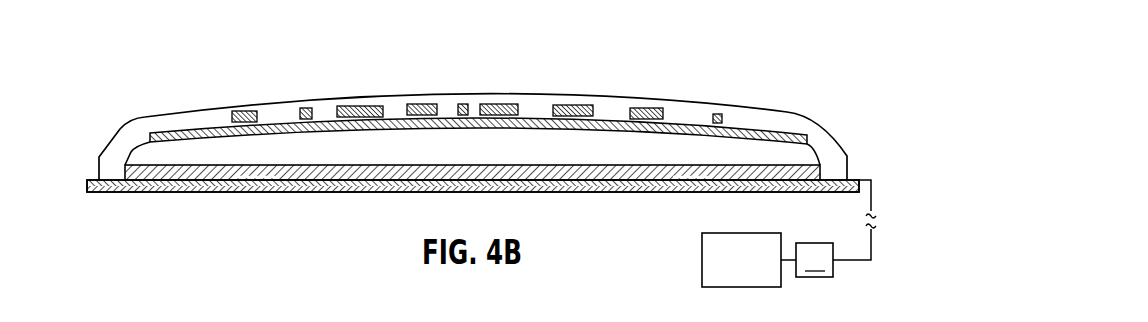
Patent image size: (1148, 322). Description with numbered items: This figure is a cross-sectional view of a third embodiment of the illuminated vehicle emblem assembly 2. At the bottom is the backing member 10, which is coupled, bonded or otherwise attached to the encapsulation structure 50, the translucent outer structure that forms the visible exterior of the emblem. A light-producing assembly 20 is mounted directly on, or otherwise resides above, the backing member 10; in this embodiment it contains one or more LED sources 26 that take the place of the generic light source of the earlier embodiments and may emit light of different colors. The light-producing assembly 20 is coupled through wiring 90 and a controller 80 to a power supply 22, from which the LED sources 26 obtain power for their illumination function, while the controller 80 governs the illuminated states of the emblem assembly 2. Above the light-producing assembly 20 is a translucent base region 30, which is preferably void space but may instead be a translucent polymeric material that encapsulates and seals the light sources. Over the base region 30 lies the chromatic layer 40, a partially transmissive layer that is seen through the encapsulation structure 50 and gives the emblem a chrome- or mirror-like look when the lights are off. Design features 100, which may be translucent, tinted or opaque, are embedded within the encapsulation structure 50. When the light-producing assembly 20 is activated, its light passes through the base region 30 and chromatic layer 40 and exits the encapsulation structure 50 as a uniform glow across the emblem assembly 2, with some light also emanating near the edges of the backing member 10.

The illuminated vehicle emblem assembly 2 is at (194, 60).
The backing member 10 is at (95, 178).
The light-producing assembly 20 is at (190, 163).
The power supply 22 is at (702, 254).
The LED sources 26 is at (252, 192).
The base region 30 is at (732, 150).
The chromatic layer 40 is at (215, 168).
The encapsulation structure 50 is at (613, 104).
The controller 80 is at (814, 260).
The wiring 90 is at (856, 261).
The design features 100 is at (240, 114).